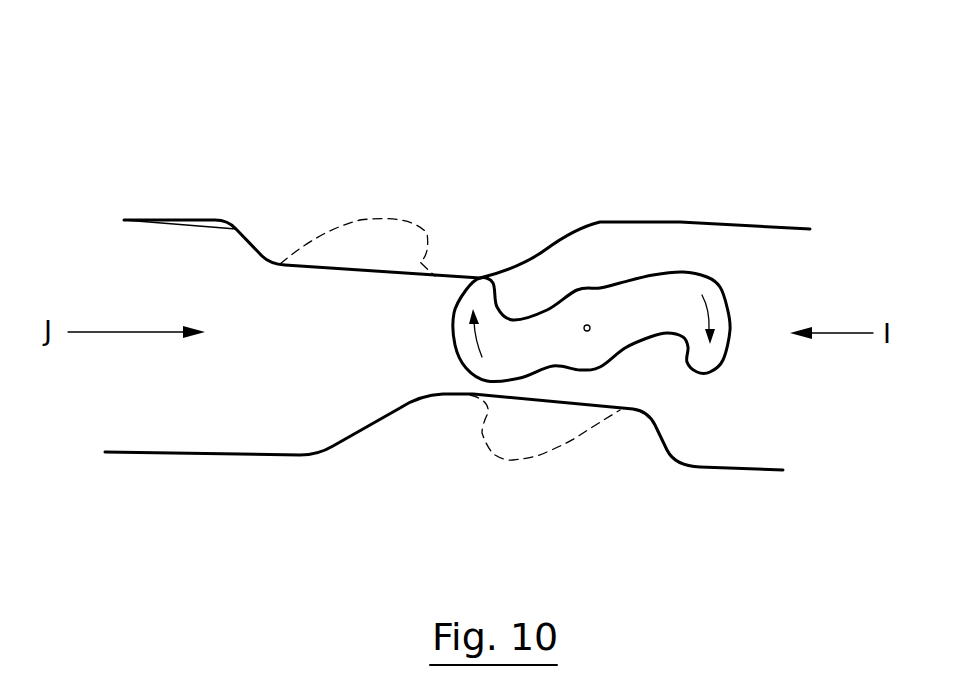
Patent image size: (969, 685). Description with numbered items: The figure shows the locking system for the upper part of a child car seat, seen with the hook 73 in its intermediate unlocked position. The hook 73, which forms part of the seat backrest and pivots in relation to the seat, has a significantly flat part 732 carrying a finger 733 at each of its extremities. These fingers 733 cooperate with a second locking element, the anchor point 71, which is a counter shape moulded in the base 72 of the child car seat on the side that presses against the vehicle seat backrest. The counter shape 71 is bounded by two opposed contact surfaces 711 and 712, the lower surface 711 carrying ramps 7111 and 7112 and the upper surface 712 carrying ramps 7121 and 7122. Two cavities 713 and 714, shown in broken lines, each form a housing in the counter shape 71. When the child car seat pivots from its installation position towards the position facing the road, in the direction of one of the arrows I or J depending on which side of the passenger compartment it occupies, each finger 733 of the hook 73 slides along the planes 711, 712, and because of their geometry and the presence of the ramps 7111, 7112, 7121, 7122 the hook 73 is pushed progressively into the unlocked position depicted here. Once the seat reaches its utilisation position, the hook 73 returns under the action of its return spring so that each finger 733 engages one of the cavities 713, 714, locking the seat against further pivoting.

The anchor point 71 is at (158, 290).
The contact surface 711 is at (190, 452).
The ramp 7111 is at (352, 433).
The ramp 7112 is at (667, 432).
The contact surface 712 is at (182, 220).
The ramp 7121 is at (236, 232).
The ramp 7122 is at (563, 232).
The cavity 713 is at (378, 230).
The cavity 714 is at (550, 435).
The base 72 is at (212, 180).
The hook 73 is at (667, 295).
The flat part 732 is at (627, 312).
The finger 733 is at (480, 278).